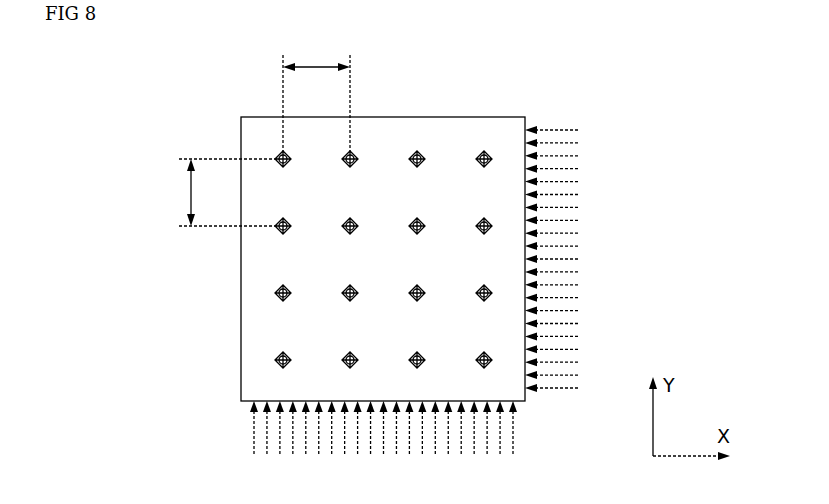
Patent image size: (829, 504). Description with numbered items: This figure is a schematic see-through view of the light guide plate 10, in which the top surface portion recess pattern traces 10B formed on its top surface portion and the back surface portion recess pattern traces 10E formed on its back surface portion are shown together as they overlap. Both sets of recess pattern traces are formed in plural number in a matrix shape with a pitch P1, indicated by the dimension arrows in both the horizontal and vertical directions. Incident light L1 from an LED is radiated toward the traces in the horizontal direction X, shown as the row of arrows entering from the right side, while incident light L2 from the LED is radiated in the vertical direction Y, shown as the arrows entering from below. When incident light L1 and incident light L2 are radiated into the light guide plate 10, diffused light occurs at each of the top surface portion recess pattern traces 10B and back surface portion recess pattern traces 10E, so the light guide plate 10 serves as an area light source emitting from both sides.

The light guide plate 10 is at (384, 137).
The top surface portion recess pattern traces 10B is at (397, 224).
The back surface portion recess pattern traces 10E is at (418, 155).
The pitch P1 is at (255, 133).
The incident light L1 is at (560, 130).
The incident light L2 is at (513, 432).